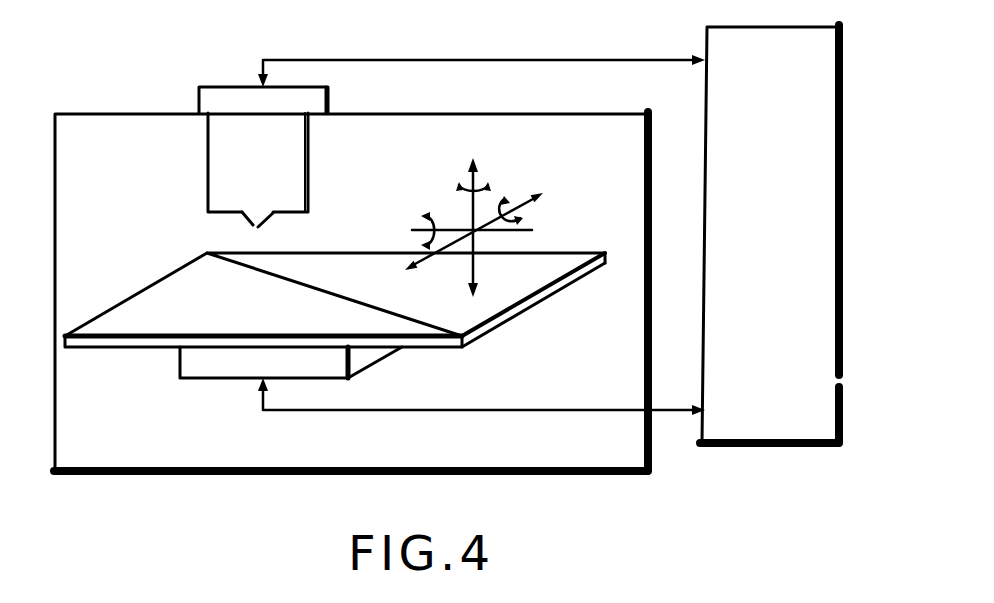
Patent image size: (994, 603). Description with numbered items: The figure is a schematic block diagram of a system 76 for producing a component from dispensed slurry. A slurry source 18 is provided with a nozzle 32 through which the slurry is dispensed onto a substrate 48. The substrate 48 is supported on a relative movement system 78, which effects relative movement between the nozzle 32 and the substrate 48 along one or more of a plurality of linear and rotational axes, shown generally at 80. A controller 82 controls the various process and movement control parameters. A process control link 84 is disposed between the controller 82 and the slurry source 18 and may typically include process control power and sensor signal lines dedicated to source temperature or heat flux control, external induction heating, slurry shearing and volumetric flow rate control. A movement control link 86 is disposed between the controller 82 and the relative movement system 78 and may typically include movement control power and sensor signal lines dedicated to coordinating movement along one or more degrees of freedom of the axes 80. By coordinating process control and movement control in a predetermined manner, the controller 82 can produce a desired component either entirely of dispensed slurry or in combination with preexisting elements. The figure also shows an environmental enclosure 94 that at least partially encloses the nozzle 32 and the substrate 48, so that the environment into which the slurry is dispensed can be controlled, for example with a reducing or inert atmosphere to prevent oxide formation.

The system 76 is at (168, 74).
The slurry source 18 is at (192, 170).
The nozzle 32 is at (273, 217).
The substrate 48 is at (166, 295).
The relative movement system 78 is at (170, 373).
The linear and rotational axes 80 is at (468, 225).
The process control link 84 is at (523, 57).
The movement control link 86 is at (377, 413).
The controller 82 is at (823, 198).
The environmental enclosure 94 is at (543, 114).